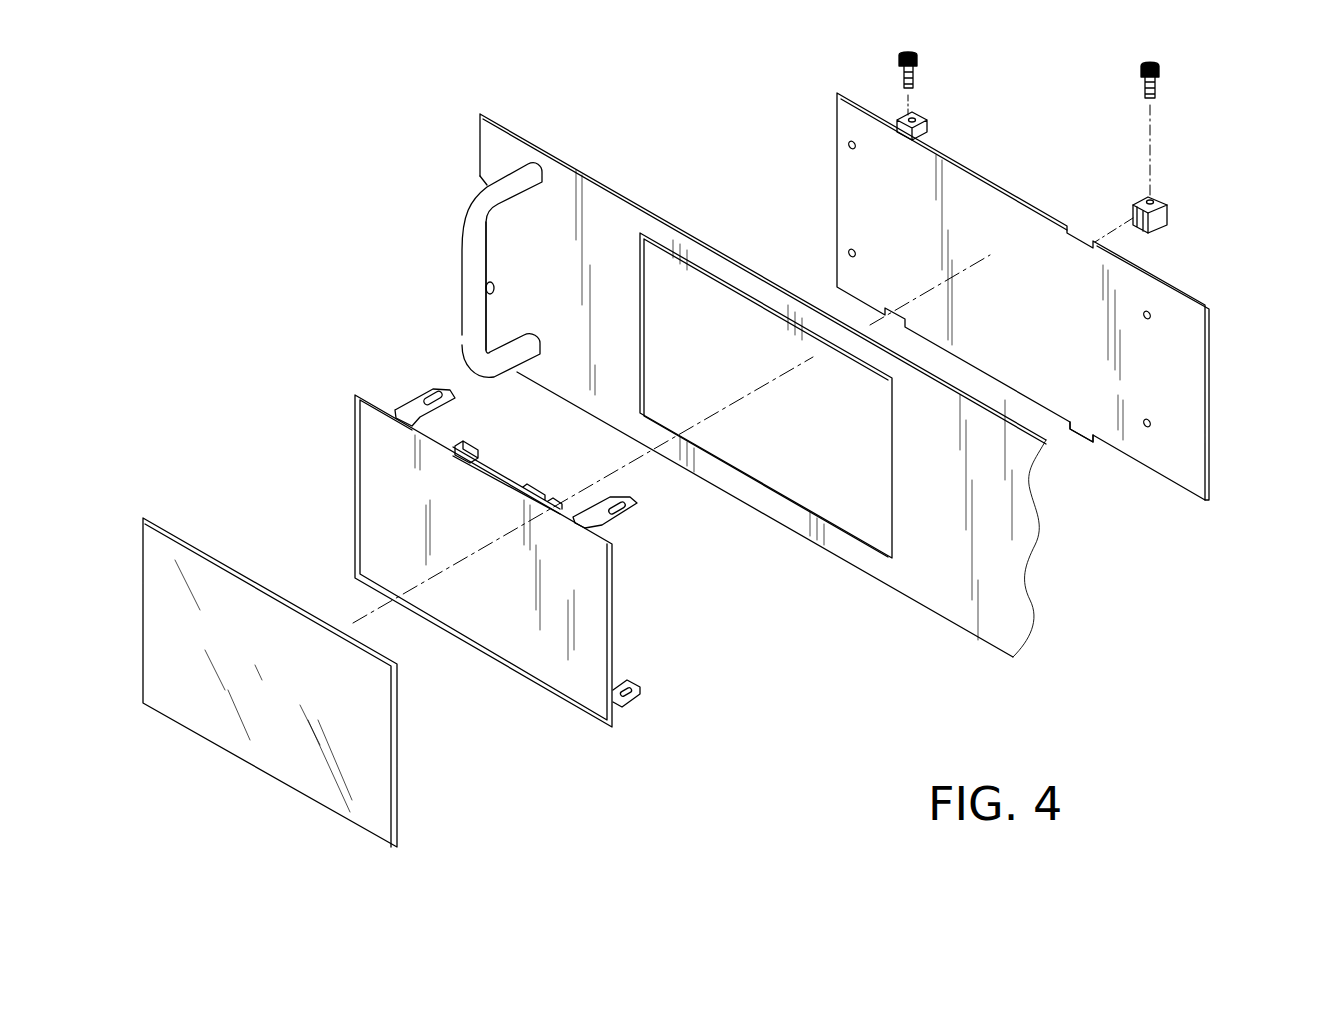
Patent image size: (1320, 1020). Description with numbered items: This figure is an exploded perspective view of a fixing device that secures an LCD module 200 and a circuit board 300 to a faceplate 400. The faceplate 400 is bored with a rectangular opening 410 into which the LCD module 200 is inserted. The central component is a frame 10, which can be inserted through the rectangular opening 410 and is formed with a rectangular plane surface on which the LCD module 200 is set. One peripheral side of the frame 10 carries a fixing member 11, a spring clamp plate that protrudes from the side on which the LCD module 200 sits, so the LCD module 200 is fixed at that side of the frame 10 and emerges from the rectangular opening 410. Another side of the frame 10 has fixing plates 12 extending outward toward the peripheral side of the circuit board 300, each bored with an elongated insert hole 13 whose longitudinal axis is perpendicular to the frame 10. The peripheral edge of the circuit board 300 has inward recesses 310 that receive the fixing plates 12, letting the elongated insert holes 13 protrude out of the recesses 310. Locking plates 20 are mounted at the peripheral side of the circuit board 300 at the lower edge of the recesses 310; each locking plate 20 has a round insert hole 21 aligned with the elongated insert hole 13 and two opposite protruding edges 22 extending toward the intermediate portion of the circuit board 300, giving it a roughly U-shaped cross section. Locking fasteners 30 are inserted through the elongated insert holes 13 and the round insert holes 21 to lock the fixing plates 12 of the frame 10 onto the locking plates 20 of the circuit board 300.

The frame 10 is at (540, 513).
The fixing member 11 is at (480, 453).
The fixing plate 12 is at (405, 407).
The elongated insert hole 13 is at (435, 392).
The locking plate 20 is at (1178, 206).
The round insert hole 21 is at (1152, 199).
The protruding edge 22 is at (1132, 214).
The locking fastener 30 is at (1164, 82).
The LCD module 200 is at (213, 551).
The circuit board 300 is at (1067, 283).
The inward recess 310 is at (1081, 426).
The faceplate 400 is at (754, 365).
The rectangular opening 410 is at (835, 548).